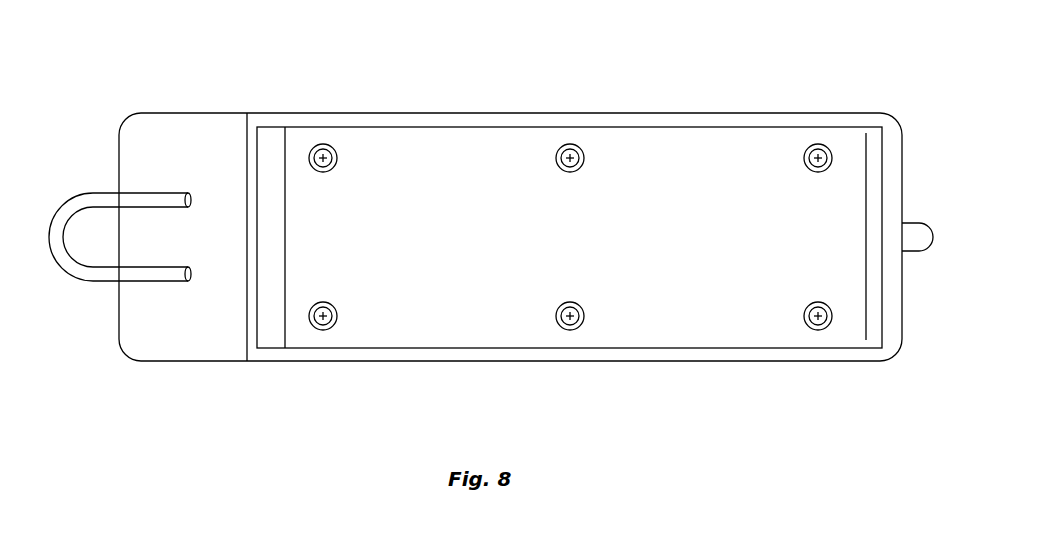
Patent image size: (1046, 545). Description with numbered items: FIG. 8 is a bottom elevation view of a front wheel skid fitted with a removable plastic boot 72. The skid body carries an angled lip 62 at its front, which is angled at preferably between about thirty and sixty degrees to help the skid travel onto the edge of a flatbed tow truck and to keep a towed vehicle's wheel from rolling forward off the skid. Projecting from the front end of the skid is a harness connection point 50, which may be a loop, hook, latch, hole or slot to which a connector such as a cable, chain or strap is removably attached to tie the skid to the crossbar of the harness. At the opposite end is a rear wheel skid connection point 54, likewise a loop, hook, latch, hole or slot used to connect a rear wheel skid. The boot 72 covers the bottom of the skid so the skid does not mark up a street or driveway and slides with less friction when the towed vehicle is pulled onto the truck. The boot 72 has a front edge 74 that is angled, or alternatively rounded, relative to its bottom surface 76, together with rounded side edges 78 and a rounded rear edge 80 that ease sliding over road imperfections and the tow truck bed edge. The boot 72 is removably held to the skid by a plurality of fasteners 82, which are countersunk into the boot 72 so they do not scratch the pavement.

The harness connection point 50 is at (100, 193).
The rear wheel skid connection point 54 is at (912, 224).
The angled lip 62 is at (191, 330).
The removable plastic boot 72 is at (738, 304).
The front edge 74 is at (270, 143).
The bottom surface 76 is at (695, 162).
The rounded side edges 78 is at (433, 118).
The rounded rear edge 80 is at (873, 272).
The fasteners 82 is at (572, 143).